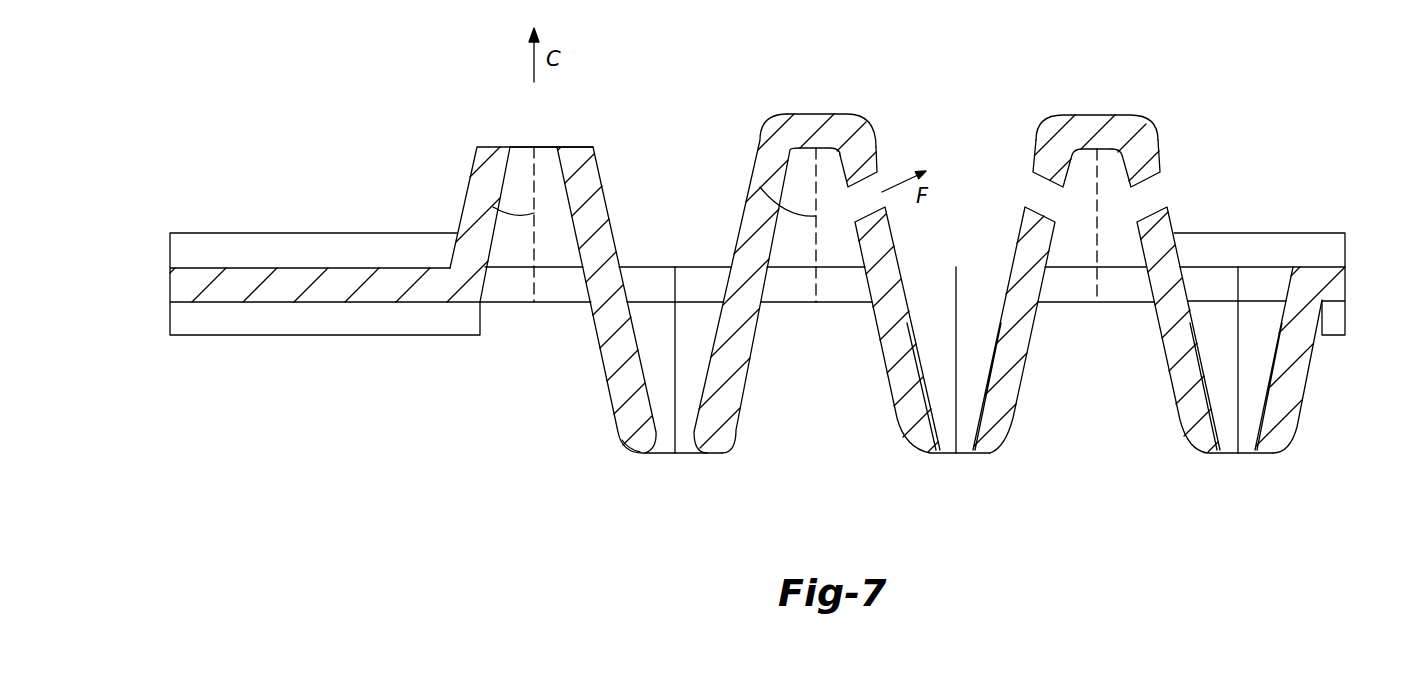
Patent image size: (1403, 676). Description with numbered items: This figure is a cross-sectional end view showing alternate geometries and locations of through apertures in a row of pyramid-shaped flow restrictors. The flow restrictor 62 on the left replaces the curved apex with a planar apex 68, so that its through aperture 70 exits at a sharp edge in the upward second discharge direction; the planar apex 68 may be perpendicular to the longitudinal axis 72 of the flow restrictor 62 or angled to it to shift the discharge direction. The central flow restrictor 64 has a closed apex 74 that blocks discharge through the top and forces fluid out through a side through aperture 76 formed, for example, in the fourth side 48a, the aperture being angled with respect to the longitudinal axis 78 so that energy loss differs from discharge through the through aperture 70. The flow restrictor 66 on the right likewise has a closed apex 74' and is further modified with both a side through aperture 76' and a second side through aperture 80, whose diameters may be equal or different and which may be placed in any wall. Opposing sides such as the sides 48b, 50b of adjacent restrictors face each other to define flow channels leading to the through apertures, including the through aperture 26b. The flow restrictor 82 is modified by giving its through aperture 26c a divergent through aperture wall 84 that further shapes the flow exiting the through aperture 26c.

The flow restrictor 62 is at (638, 90).
The flow restrictor 64 is at (888, 58).
The flow restrictor 66 is at (1172, 90).
The planar apex 68 is at (582, 142).
The through aperture 70 is at (507, 172).
The longitudinal axis 72 is at (483, 203).
The closed apex 74 is at (831, 106).
The closed apex 74' is at (1096, 93).
The side through aperture 76 is at (880, 144).
The side through aperture 76' is at (1175, 163).
The longitudinal axis 78 is at (752, 182).
The second side through aperture 80 is at (1024, 178).
The flow restrictor 82 is at (598, 410).
The divergent through aperture wall 84 is at (654, 455).
The through aperture 26b is at (962, 457).
The through aperture 26c is at (684, 457).
The fourth side 48a is at (886, 276).
The wall 48b is at (1162, 222).
The wall 50b is at (1033, 223).